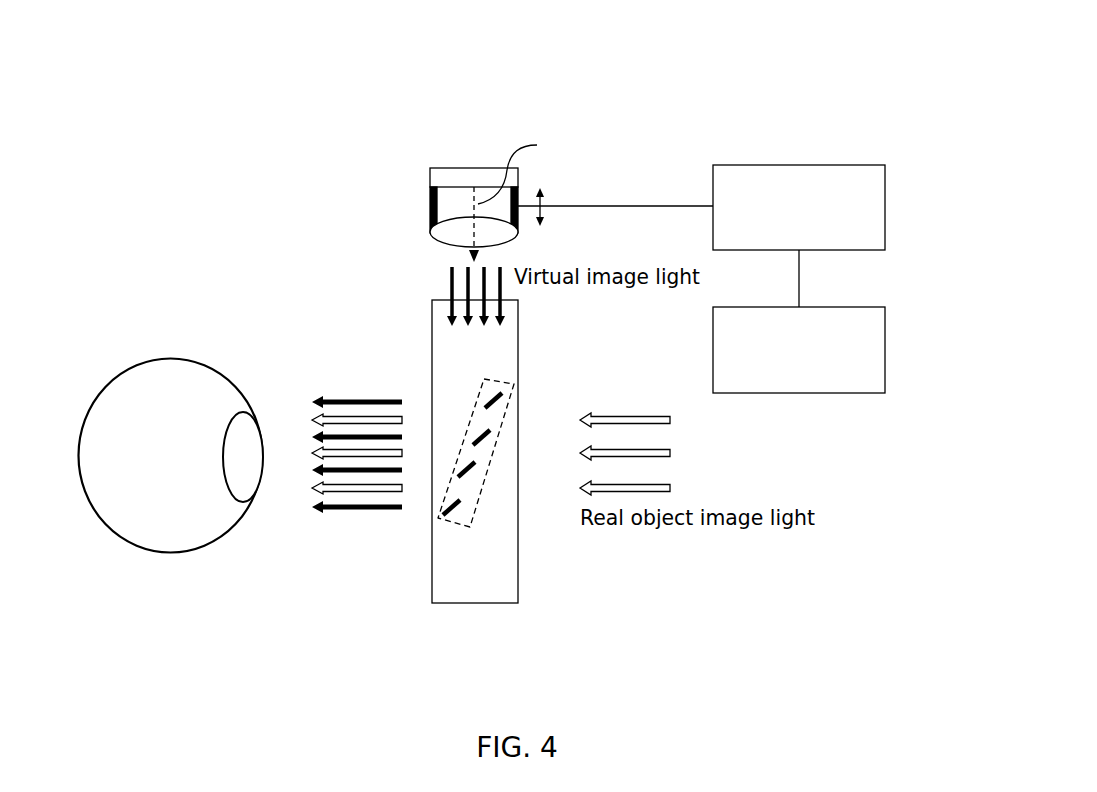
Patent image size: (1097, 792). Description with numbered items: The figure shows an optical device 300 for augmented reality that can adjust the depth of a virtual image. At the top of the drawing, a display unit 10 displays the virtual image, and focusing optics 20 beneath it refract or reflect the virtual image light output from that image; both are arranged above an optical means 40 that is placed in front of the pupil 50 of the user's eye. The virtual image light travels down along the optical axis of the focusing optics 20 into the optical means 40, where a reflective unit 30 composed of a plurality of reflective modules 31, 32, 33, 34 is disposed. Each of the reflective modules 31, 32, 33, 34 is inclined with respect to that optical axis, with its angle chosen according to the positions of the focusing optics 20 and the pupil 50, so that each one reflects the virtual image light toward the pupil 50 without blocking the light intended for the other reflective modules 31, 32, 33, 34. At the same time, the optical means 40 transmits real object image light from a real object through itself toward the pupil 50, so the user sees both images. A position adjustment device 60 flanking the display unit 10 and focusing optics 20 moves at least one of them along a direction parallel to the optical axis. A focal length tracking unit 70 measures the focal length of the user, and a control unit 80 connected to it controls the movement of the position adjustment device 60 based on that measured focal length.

The optical device for augmented reality 300 is at (538, 104).
The display unit 10 is at (429, 178).
The position adjustment device 60 is at (429, 206).
The focusing optics 20 is at (429, 236).
The reflective unit 30 is at (475, 507).
The reflective module 31 is at (502, 393).
The reflective module 32 is at (483, 438).
The reflective module 33 is at (470, 470).
The reflective module 34 is at (445, 522).
The optical means 40 is at (473, 603).
The pupil 50 is at (262, 492).
The focal length tracking unit 70 is at (885, 351).
The control unit 80 is at (885, 208).